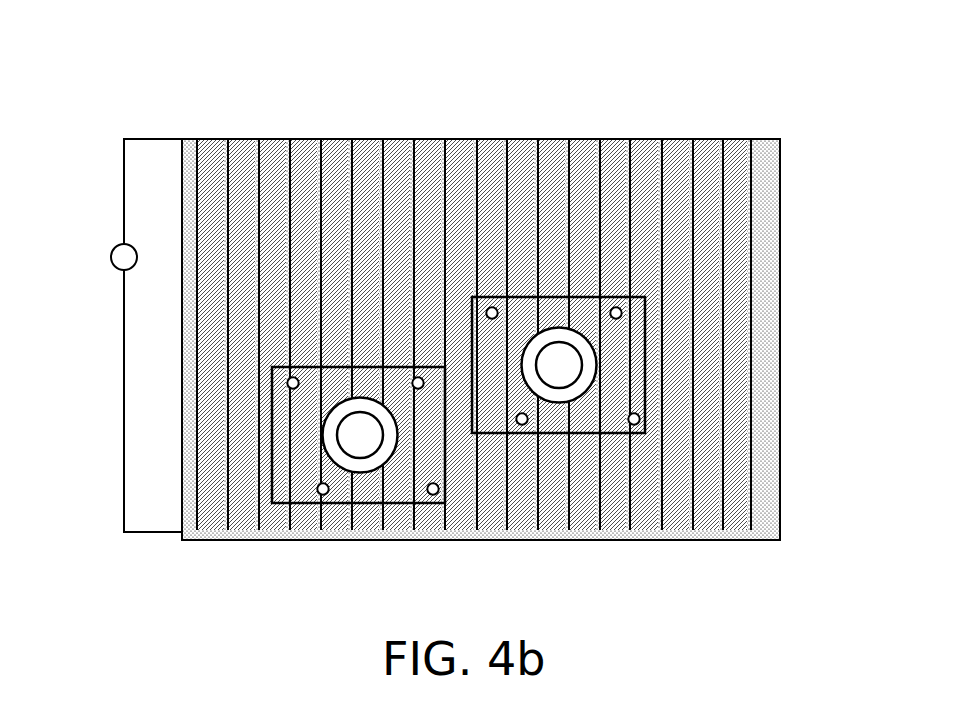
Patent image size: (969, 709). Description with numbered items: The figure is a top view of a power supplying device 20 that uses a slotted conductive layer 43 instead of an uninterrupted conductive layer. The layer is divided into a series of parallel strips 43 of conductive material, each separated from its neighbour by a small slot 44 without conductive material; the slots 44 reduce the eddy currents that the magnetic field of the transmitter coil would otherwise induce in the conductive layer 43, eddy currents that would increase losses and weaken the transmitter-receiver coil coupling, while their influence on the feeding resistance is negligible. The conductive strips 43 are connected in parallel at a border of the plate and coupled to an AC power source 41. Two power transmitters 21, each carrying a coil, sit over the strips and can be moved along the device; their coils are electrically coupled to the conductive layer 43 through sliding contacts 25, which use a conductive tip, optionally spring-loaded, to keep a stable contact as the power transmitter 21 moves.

The power supplying device 20 is at (527, 316).
The power transmitter 21 is at (397, 504).
The sliding contact 25 is at (317, 493).
The AC power source 41 is at (111, 257).
The slotted conductive layer 43 is at (395, 212).
The slot 44 is at (552, 212).